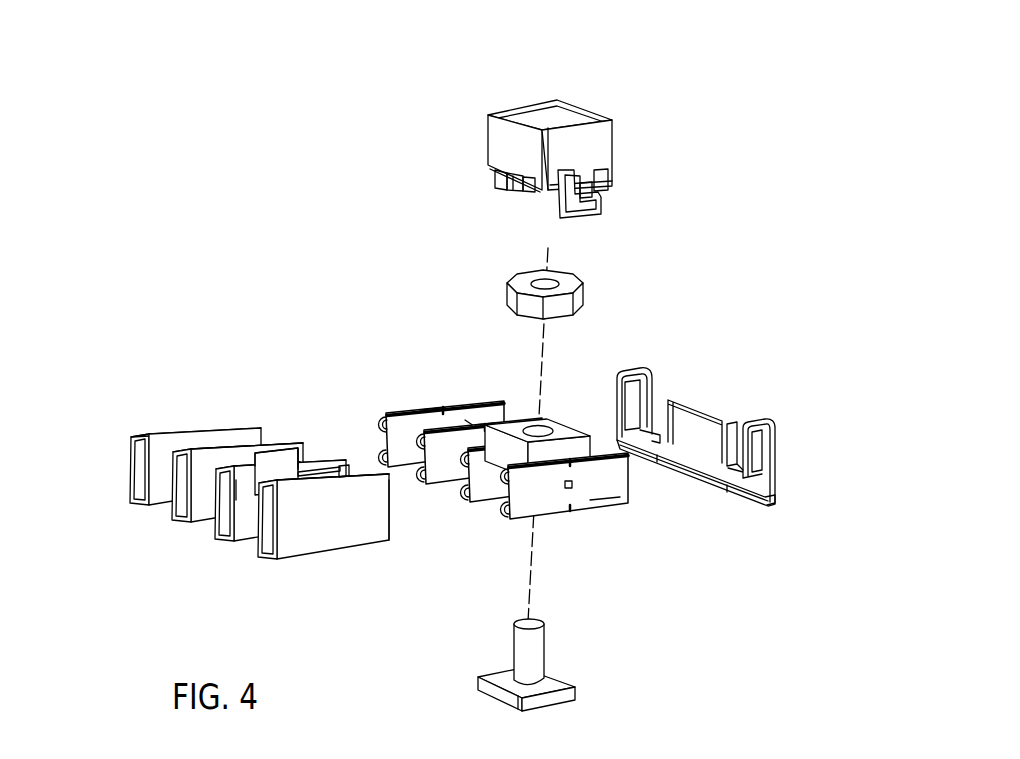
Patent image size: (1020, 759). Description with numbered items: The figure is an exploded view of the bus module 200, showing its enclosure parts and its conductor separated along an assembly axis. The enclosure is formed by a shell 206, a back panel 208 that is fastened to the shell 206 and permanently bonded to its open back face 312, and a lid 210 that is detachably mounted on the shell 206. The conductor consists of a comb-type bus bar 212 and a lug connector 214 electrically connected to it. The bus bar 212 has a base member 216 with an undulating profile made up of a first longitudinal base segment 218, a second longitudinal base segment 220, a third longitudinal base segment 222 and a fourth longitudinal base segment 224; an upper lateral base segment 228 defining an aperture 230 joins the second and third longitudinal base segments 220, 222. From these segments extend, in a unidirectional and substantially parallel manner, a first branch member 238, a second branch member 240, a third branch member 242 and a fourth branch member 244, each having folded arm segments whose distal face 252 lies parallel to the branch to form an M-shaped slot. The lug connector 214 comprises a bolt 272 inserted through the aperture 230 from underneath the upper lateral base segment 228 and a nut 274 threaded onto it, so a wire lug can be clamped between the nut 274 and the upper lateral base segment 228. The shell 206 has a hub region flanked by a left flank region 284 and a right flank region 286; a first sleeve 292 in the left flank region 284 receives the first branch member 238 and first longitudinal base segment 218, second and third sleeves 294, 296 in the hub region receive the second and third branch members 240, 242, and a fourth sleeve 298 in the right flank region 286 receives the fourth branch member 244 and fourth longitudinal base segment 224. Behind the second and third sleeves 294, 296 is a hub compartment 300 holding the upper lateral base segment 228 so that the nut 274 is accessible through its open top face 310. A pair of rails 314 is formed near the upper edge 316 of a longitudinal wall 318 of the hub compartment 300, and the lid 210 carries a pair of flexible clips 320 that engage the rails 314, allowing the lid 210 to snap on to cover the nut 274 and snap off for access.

The bus module 200 is at (272, 158).
The shell 206 is at (153, 461).
The back panel 208 is at (727, 451).
The lid 210 is at (586, 165).
The bus bar 212 is at (432, 408).
The lug connector 214 is at (524, 476).
The base member 216 is at (651, 498).
The first longitudinal base segment 218 is at (473, 418).
The second longitudinal base segment 220 is at (485, 424).
The third longitudinal base segment 222 is at (548, 452).
The fourth longitudinal base segment 224 is at (600, 492).
The upper lateral base segment 228 is at (549, 422).
The aperture 230 is at (533, 426).
The first branch member 238 is at (437, 467).
The second branch member 240 is at (479, 444).
The third branch member 242 is at (497, 519).
The fourth branch member 244 is at (585, 516).
The distal face 252 is at (205, 467).
The bolt 272 is at (514, 622).
The nut 274 is at (507, 283).
The left flank region 284 is at (122, 513).
The right flank region 286 is at (351, 484).
The first sleeve 292 is at (177, 437).
The second sleeve 294 is at (218, 450).
The third sleeve 296 is at (243, 462).
The fourth sleeve 298 is at (350, 478).
The hub compartment 300 is at (315, 508).
The open top face 310 is at (248, 483).
The open back face 312 is at (390, 523).
The rails 314 is at (246, 491).
The upper edge 316 is at (283, 452).
The longitudinal wall 318 is at (297, 460).
The flexible clips 320 is at (601, 207).